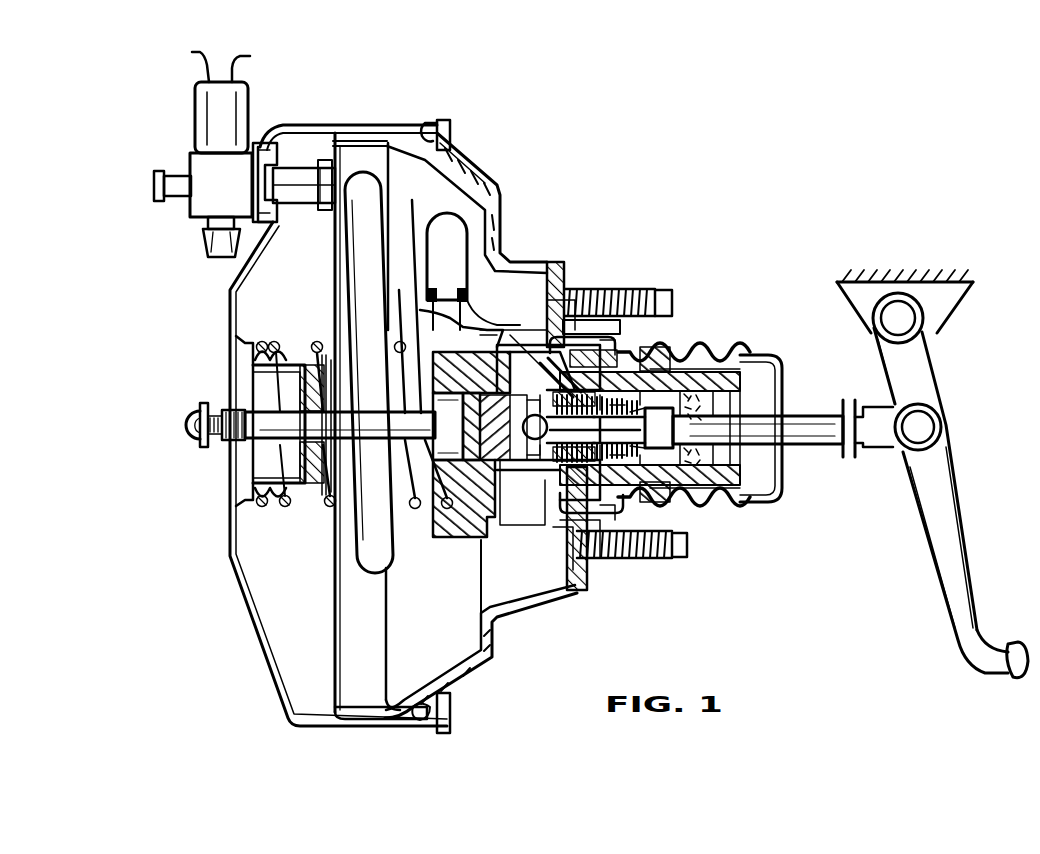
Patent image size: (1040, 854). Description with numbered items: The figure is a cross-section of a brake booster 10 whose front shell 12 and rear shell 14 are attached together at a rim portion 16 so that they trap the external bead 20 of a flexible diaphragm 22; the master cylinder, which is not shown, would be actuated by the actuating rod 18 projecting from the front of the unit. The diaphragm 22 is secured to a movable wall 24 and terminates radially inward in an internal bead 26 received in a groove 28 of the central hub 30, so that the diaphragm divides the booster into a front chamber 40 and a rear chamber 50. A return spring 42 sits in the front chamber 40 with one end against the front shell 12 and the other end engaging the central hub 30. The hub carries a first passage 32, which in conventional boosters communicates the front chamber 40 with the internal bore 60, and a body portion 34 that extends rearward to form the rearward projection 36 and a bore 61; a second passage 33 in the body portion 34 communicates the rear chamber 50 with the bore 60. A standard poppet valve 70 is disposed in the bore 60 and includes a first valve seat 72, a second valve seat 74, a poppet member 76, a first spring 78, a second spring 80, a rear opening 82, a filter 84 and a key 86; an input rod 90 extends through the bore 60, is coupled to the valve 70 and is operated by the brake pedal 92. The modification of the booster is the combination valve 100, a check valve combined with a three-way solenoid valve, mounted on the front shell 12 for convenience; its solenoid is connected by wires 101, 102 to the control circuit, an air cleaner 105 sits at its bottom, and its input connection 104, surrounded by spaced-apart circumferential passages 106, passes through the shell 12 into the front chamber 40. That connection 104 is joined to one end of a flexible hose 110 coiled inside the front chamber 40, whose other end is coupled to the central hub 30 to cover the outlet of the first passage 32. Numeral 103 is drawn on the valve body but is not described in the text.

The booster 10 is at (653, 203).
The front shell 12 is at (230, 545).
The rear shell 14 is at (503, 198).
The rim portion 16 is at (450, 122).
The actuating rod 18 is at (258, 432).
The external bead 20 is at (429, 122).
The flexible diaphragm 22 is at (333, 130).
The movable wall 24 is at (460, 162).
The internal bead 26 is at (520, 330).
The groove 28 is at (548, 332).
The central hub 30 is at (578, 328).
The first passage 32 is at (465, 375).
The second passage 33 is at (553, 478).
The body portion 34 is at (515, 522).
The rearward projection 36 is at (735, 345).
The front chamber 40 is at (303, 284).
The return spring 42 is at (323, 362).
The rear chamber 50 is at (542, 581).
The internal bore 60 is at (585, 392).
The bore 61 is at (677, 487).
The poppet valve 70 is at (597, 545).
The first valve seat 72 is at (588, 392).
The second valve seat 74 is at (630, 560).
The poppet member 76 is at (657, 390).
The first spring 78 is at (660, 397).
The second spring 80 is at (610, 507).
The rear opening 82 is at (745, 470).
The filter 84 is at (737, 497).
The key 86 is at (510, 340).
The input rod 90 is at (822, 432).
The brake pedal 92 is at (937, 548).
The combination valve 100 is at (210, 108).
The wire 101 is at (193, 54).
The wire 102 is at (250, 56).
The inlet port 103 is at (178, 176).
The input connection 104 is at (297, 160).
The air cleaner 105 is at (205, 246).
The circumferential passages 106 is at (283, 215).
The flexible hose 110 is at (372, 209).